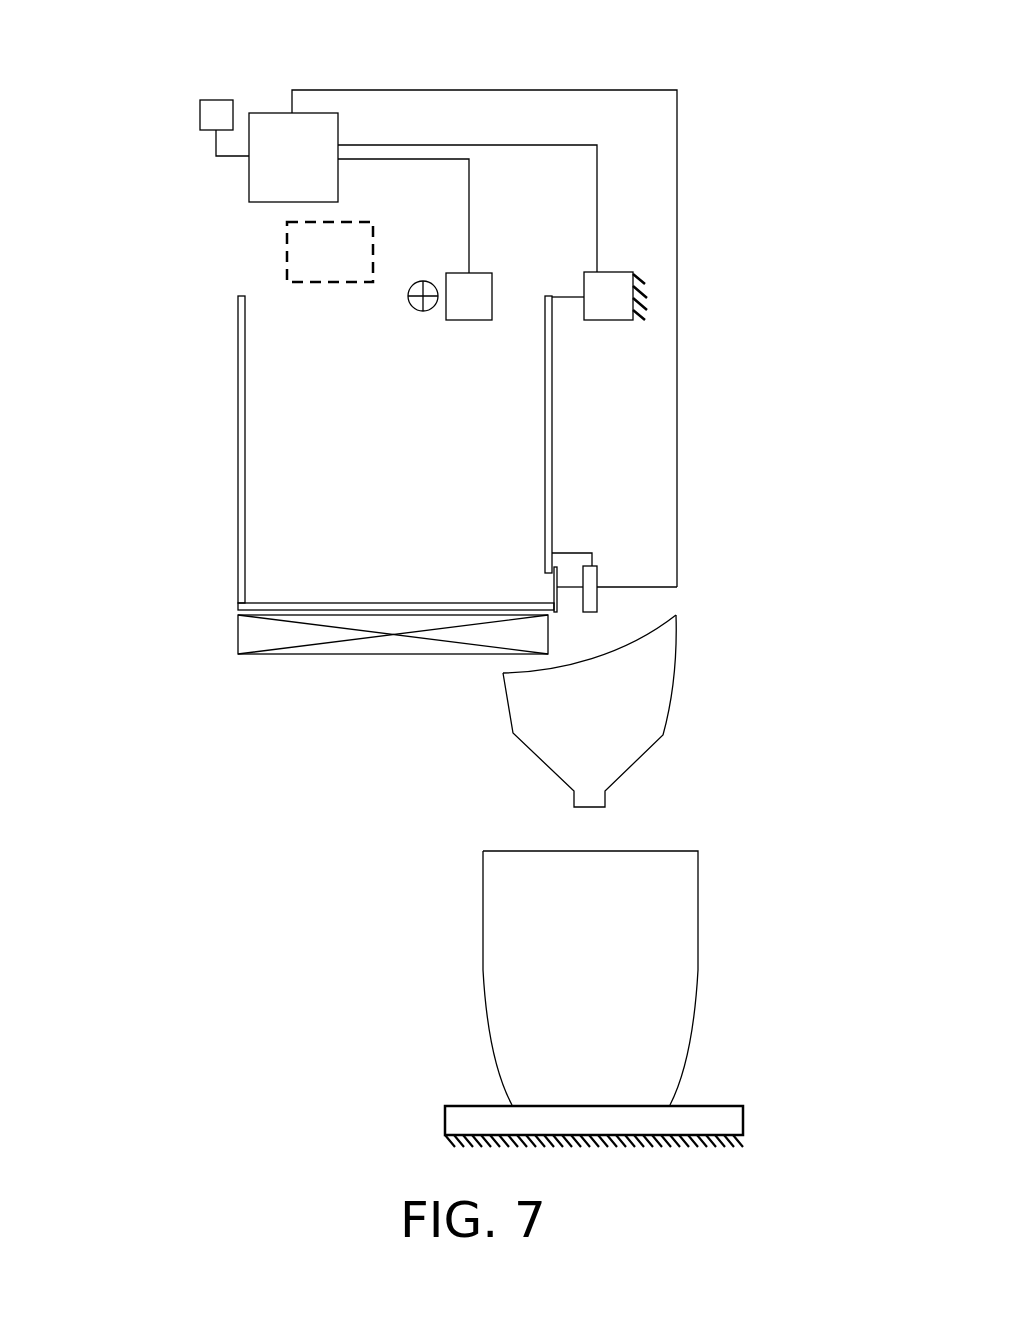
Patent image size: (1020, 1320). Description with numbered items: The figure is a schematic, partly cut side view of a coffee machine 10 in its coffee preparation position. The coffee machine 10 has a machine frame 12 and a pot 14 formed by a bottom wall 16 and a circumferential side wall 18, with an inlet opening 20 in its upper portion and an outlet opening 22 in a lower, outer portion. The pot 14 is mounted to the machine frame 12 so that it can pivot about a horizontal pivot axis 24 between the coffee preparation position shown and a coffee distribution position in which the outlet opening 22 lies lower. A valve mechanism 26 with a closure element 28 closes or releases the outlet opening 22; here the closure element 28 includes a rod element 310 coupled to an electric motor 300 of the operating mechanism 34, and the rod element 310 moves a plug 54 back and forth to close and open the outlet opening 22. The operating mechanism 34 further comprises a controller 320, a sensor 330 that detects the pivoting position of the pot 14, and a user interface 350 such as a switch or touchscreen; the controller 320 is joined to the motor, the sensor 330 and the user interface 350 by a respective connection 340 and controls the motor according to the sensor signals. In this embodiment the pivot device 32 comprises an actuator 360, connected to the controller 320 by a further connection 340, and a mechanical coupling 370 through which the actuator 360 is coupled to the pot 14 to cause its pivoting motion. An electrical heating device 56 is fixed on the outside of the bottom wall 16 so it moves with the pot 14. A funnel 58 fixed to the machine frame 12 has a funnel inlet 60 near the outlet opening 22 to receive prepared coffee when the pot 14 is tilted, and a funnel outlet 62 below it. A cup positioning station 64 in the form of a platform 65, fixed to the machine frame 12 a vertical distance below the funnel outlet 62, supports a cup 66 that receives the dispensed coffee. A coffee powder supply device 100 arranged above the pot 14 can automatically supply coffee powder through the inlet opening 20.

The coffee machine 10 is at (333, 72).
The machine frame 12 is at (640, 322).
The pot 14 is at (238, 308).
The bottom wall 16 is at (240, 635).
The circumferential side wall 18 is at (243, 436).
The inlet opening 20 is at (318, 309).
The outlet opening 22 is at (551, 598).
The horizontal pivot axis 24 is at (422, 311).
The valve mechanism 26 is at (570, 540).
The closure element 28 is at (565, 575).
The pivot device 32 is at (565, 272).
The operating mechanism 34 is at (257, 103).
The plug 54 is at (553, 578).
The electrical heating device 56 is at (245, 637).
The funnel 58 is at (656, 695).
The funnel inlet 60 is at (540, 663).
The funnel outlet 62 is at (590, 800).
The cup positioning station 64 is at (437, 1110).
The platform 65 is at (712, 1110).
The cup 66 is at (495, 960).
The coffee powder supply device 100 is at (292, 262).
The electric motor 300 is at (590, 583).
The rod element 310 is at (567, 596).
The controller 320 is at (263, 181).
The sensor 330 is at (455, 285).
The connection 340 is at (216, 151).
The user interface 350 is at (202, 105).
The actuator 360 is at (610, 285).
The mechanical coupling 370 is at (570, 305).